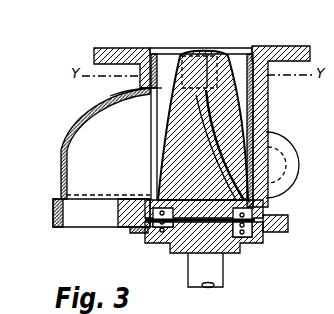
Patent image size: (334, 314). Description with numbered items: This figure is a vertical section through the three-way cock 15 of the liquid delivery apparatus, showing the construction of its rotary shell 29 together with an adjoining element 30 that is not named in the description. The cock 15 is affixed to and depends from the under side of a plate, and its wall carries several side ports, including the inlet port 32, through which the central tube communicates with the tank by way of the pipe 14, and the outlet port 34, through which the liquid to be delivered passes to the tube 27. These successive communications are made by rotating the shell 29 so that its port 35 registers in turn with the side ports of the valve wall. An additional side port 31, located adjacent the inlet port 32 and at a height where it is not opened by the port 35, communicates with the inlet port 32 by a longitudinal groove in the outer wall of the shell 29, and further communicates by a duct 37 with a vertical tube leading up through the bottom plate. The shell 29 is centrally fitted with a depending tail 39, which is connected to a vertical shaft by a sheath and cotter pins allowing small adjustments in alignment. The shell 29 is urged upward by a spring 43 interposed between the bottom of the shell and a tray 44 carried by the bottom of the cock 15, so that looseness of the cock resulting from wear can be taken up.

The pipe 14 is at (270, 160).
The cock 15 is at (94, 53).
The tube 27 is at (93, 215).
The rotary shell 29 is at (225, 89).
The right top plate 30 is at (237, 46).
The additional side port 31 is at (148, 86).
The inlet port 32 is at (240, 116).
The outlet port 34 is at (150, 158).
The port 35 is at (153, 127).
The duct 37 is at (203, 47).
The depending tail 39 is at (223, 267).
The spring 43 is at (268, 220).
The tray 44 is at (150, 243).